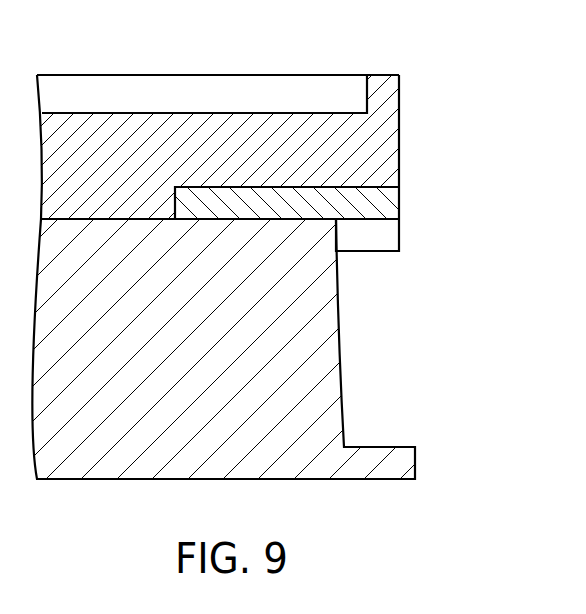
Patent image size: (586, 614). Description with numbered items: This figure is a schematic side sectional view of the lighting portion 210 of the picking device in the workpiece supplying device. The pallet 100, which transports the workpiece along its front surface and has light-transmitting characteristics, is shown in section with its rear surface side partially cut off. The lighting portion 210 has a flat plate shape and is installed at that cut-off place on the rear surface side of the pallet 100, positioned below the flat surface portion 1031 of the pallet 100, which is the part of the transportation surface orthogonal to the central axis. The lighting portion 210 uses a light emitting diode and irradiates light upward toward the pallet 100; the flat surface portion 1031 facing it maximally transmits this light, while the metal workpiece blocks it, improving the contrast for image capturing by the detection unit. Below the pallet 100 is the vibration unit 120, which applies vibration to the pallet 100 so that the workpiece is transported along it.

The flat surface portion 1031 is at (183, 113).
The pallet 100 is at (400, 119).
The lighting portion 210 is at (400, 199).
The vibration unit 120 is at (422, 220).